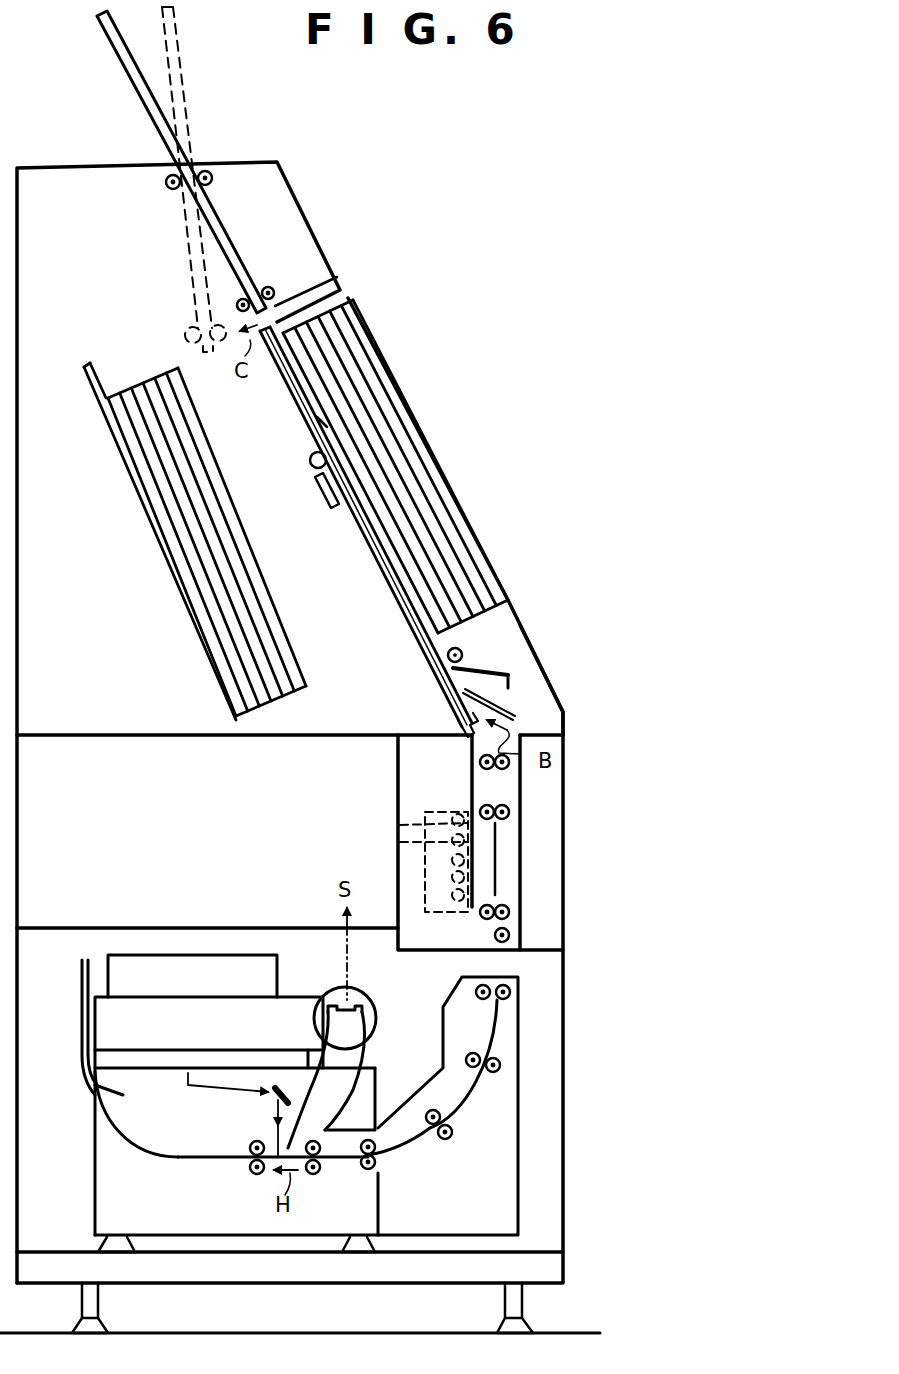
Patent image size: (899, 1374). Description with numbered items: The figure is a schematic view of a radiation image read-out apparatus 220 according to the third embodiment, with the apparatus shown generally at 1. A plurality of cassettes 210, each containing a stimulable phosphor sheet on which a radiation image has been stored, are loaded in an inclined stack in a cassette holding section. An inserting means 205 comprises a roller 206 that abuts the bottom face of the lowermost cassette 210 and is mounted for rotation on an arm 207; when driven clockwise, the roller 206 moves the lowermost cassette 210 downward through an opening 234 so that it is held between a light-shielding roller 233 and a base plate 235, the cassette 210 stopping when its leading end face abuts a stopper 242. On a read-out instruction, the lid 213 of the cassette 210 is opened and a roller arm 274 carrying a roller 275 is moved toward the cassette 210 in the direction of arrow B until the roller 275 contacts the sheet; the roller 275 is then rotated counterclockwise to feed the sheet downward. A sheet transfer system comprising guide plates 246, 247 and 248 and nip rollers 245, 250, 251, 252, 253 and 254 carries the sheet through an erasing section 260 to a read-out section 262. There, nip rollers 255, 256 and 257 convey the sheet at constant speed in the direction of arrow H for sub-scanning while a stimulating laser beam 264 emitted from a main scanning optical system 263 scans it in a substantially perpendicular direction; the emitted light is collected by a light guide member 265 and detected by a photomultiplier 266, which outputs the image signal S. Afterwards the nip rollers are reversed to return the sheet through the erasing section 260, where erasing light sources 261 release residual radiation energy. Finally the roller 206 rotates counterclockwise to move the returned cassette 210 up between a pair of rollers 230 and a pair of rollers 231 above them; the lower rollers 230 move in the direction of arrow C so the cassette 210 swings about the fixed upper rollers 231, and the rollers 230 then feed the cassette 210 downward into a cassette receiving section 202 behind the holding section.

The image forming apparatus 1 is at (380, 323).
The cassette receiving section 202 is at (118, 437).
The inserting means 205 is at (316, 515).
The roller 206 is at (312, 466).
The arm 207 is at (325, 512).
The cassette 210 is at (450, 703).
The lid 213 is at (510, 667).
The radiation image read-out apparatus 220 is at (459, 410).
The pair of rollers 230 is at (276, 288).
The pair of rollers 231 is at (213, 180).
The light-shielding roller 233 is at (463, 657).
The opening 234 is at (428, 626).
The base plate 235 is at (428, 655).
The stopper 242 is at (462, 752).
The nip rollers 245 is at (506, 771).
The guide plate 246 is at (497, 887).
The guide plate 247 is at (490, 1020).
The guide plate 248 is at (175, 1162).
The nip rollers 250 is at (510, 814).
The nip rollers 251 is at (483, 919).
The nip rollers 252 is at (478, 992).
The nip rollers 253 is at (506, 1070).
The nip rollers 254 is at (448, 1139).
The nip rollers 255 is at (376, 1168).
The nip rollers 256 is at (316, 1176).
The nip rollers 257 is at (255, 1176).
The erasing section 260 is at (420, 859).
The erasing light sources 261 is at (388, 840).
The read-out section 262 is at (238, 948).
The main scanning optical system 263 is at (200, 1018).
The stimulating laser beam 264 is at (272, 1110).
The light guide member 265 is at (366, 1098).
The photomultiplier 266 is at (376, 1006).
The roller arm 274 is at (563, 727).
The roller 275 is at (475, 695).